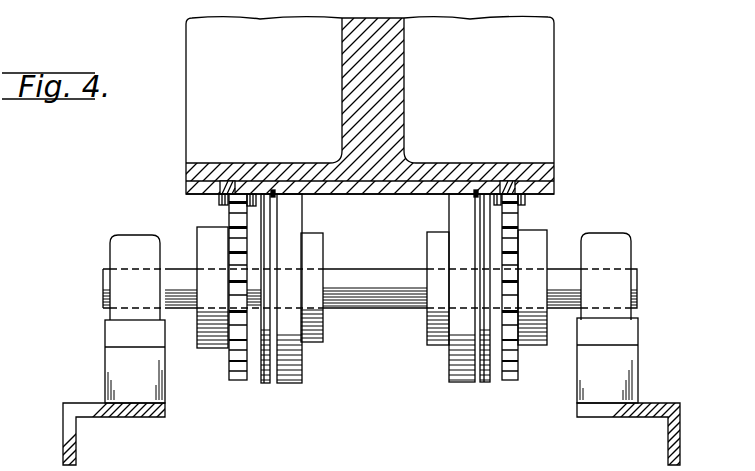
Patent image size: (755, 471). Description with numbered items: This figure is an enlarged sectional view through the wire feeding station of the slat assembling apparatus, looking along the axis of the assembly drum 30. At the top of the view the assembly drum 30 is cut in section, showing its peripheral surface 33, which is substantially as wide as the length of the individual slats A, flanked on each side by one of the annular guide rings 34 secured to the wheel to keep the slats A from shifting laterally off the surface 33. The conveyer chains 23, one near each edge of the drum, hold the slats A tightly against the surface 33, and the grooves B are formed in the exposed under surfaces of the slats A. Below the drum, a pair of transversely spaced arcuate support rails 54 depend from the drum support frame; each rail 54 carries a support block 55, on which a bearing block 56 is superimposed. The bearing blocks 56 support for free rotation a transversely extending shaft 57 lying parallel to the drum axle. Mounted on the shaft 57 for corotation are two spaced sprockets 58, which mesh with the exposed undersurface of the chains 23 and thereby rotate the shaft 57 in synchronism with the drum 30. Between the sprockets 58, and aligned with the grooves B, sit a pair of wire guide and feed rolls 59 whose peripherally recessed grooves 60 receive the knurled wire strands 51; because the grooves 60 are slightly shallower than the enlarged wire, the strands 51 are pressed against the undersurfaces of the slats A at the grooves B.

The assembly drum 30 is at (408, 106).
The peripheral surface 33 is at (413, 182).
The annular guide rings 34 is at (186, 188).
The conveyer chain 23 is at (219, 200).
The wire strand 51 is at (276, 197).
The sprockets 58 is at (238, 240).
The wire guide and feed rolls 59 is at (304, 374).
The grooves 60 is at (283, 384).
The shaft 57 is at (638, 282).
The bearing blocks 56 is at (112, 244).
The support block 55 is at (165, 380).
The support rail 54 is at (97, 417).
The slats A is at (372, 208).
The grooves B is at (275, 189).